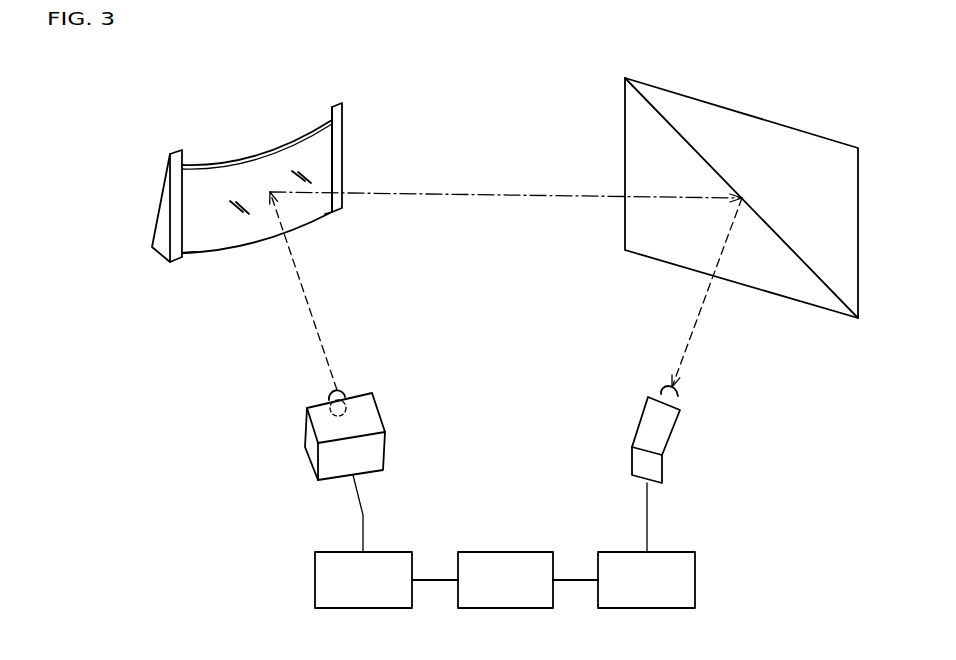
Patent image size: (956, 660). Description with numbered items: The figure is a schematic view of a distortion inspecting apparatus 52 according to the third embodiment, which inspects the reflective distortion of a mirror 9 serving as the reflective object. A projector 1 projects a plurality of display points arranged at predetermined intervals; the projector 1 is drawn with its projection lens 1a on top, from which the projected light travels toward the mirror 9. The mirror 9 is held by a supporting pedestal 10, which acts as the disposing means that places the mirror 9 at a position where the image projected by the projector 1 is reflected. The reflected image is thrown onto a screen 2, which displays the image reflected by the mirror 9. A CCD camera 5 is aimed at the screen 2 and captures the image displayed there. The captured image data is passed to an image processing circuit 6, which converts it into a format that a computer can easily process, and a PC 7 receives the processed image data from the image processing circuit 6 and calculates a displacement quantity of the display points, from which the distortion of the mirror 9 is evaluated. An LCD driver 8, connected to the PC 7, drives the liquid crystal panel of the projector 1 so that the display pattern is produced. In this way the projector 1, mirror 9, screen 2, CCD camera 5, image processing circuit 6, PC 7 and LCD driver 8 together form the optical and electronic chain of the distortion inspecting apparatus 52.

The projector 1 is at (296, 455).
The projection lens 1a is at (347, 387).
The screen 2 is at (762, 118).
The CCD camera 5 is at (681, 411).
The image processing circuit 6 is at (680, 552).
The PC 7 is at (538, 552).
The LCD driver 8 is at (396, 552).
The mirror 9 is at (303, 218).
The supporting pedestal 10 is at (160, 258).
The distortion inspecting apparatus 52 is at (468, 125).